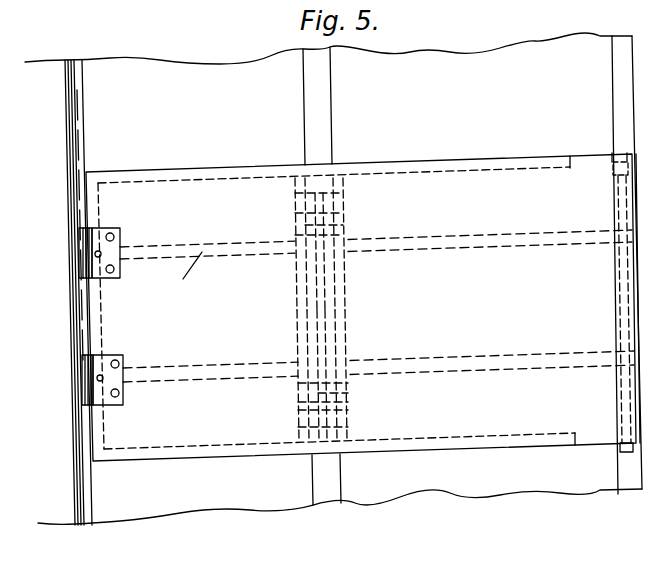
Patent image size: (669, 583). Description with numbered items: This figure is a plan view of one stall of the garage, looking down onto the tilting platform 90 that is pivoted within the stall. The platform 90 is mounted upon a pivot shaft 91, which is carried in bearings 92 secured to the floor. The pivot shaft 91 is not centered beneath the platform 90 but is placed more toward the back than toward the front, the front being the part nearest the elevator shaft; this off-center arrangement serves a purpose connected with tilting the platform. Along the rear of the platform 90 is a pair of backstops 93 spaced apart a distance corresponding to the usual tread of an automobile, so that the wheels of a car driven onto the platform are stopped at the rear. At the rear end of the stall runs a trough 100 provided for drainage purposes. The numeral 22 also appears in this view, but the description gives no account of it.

The frame 22 is at (218, 503).
The tilting platform 90 is at (495, 431).
The pivot shaft 91 is at (350, 392).
The bearings 92 is at (345, 226).
The backstops 93 is at (80, 356).
The trough 100 is at (82, 527).